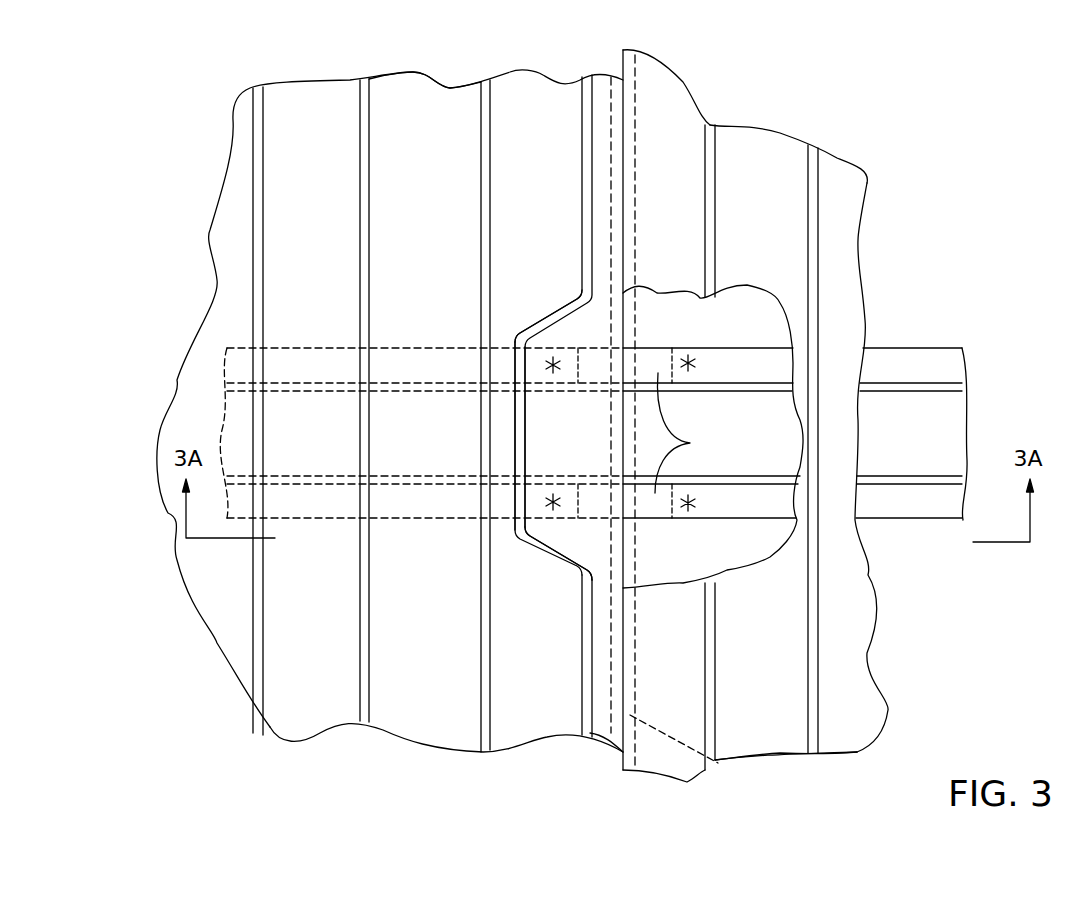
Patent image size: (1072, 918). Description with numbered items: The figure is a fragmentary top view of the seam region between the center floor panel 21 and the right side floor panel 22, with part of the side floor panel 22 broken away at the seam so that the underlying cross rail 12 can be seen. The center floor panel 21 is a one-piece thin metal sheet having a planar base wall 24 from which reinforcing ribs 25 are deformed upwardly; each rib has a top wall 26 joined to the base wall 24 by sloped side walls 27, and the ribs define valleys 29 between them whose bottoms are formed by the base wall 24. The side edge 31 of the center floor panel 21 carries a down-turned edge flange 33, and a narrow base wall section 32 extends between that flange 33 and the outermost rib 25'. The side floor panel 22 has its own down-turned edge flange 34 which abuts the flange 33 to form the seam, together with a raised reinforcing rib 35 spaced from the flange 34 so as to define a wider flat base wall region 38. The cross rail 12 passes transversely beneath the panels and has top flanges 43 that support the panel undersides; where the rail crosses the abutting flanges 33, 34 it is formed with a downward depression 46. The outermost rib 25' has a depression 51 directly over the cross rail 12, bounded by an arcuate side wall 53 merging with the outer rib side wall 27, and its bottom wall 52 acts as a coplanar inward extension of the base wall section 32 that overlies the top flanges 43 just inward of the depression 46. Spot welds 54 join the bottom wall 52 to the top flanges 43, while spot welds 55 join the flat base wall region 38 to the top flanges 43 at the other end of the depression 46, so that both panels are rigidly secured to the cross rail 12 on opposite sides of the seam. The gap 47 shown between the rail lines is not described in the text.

The cross rail 12 is at (935, 417).
The center floor panel 21 is at (428, 80).
The right side floor panel 22 is at (838, 153).
The planar base wall 24 is at (445, 143).
The reinforcing rib 25 is at (276, 450).
The outermost rib 25' is at (512, 445).
The rib top wall 26 is at (292, 218).
The rib side wall 27 is at (483, 708).
The valley 29 is at (420, 650).
The side edge 31 is at (623, 93).
The base wall section 32 is at (600, 720).
The edge flange 33 is at (613, 110).
The edge flange 34 is at (722, 772).
The raised reinforcing rib 35 is at (780, 704).
The flat base wall region 38 is at (658, 115).
The top flange 43 is at (913, 347).
The depression 46 is at (635, 363).
The gap 47 is at (690, 443).
The depression 51 is at (558, 548).
The bottom wall 52 is at (563, 332).
The side wall 53 is at (515, 533).
The spot weld 54 is at (553, 365).
The spot weld 55 is at (692, 362).